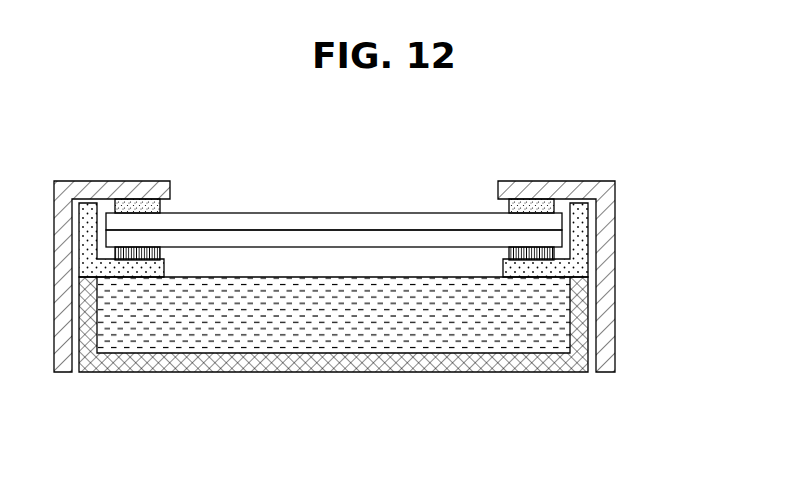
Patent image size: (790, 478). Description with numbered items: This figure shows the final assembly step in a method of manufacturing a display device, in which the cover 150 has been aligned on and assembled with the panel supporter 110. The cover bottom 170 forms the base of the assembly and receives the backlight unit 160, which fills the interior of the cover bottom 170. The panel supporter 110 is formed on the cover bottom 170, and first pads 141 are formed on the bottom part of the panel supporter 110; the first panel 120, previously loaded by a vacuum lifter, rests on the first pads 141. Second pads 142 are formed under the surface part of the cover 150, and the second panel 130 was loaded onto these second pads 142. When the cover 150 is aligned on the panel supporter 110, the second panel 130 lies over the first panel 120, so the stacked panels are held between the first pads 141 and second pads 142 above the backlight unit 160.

The panel supporter 110 is at (585, 235).
The first panel 120 is at (385, 238).
The second panel 130 is at (315, 220).
The first pads 141 is at (162, 253).
The second pads 142 is at (160, 206).
The cover 150 is at (605, 312).
The backlight unit 160 is at (335, 340).
The cover bottom 170 is at (460, 363).